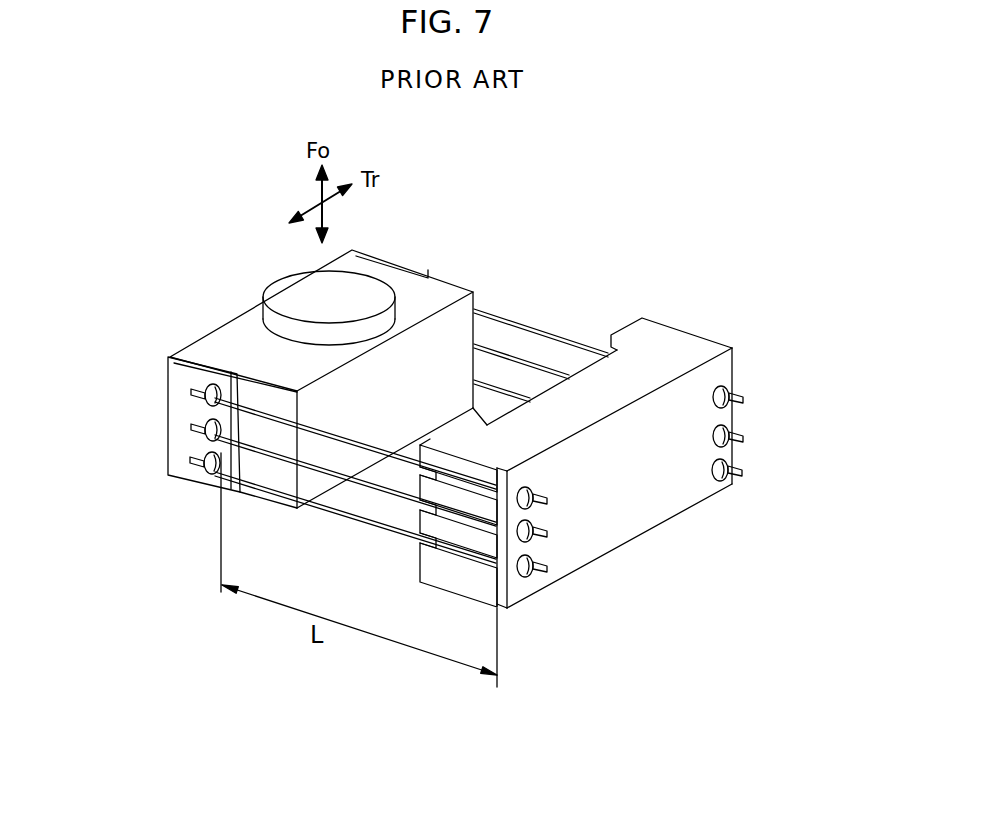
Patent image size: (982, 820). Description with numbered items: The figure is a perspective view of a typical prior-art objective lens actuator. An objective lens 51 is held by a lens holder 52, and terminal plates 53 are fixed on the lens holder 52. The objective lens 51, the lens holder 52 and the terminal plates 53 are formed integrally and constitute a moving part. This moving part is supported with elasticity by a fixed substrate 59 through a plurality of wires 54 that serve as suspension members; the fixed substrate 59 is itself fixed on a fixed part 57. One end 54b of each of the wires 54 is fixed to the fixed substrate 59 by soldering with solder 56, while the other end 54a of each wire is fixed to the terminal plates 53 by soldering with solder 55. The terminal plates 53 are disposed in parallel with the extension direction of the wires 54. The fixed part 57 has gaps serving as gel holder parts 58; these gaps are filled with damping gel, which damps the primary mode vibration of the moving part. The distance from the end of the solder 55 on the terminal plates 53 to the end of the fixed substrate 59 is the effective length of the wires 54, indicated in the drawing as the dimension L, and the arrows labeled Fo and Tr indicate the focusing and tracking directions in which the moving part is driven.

The objective lens 51 is at (282, 290).
The lens holder 52 is at (455, 283).
The terminal plates 53 is at (180, 414).
The wires 54 is at (502, 385).
The other end of wire 54a is at (193, 388).
The one end of wire 54b is at (540, 505).
The solder 55 is at (213, 388).
The solder 56 is at (533, 517).
The fixed part 57 is at (685, 332).
The gel holder parts 58 is at (467, 560).
The fixed substrate 59 is at (653, 517).